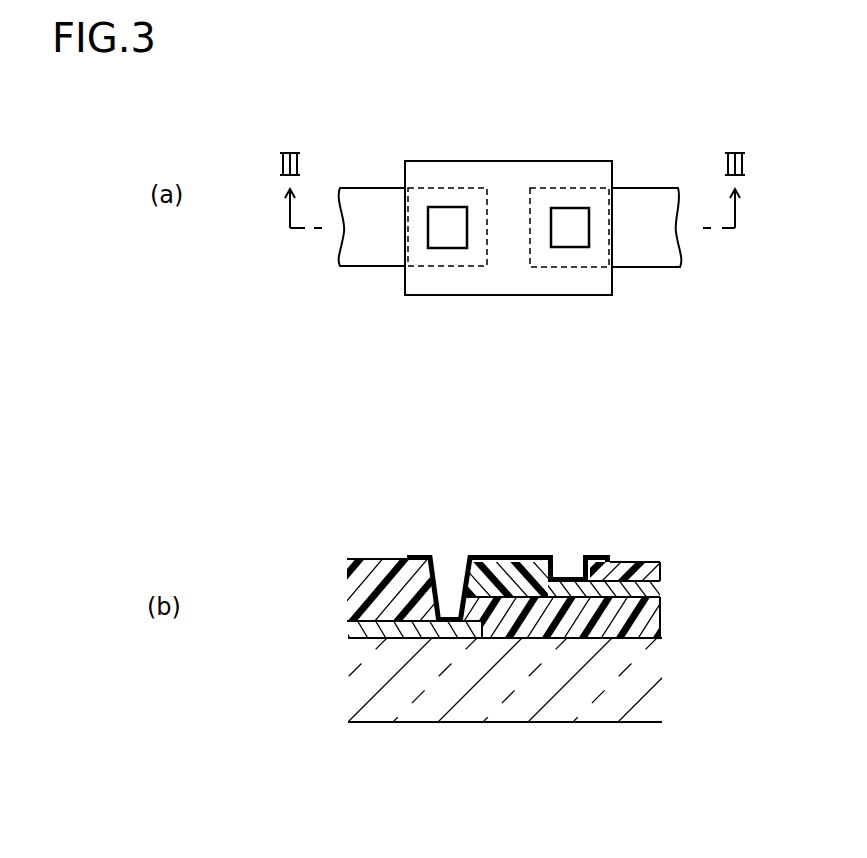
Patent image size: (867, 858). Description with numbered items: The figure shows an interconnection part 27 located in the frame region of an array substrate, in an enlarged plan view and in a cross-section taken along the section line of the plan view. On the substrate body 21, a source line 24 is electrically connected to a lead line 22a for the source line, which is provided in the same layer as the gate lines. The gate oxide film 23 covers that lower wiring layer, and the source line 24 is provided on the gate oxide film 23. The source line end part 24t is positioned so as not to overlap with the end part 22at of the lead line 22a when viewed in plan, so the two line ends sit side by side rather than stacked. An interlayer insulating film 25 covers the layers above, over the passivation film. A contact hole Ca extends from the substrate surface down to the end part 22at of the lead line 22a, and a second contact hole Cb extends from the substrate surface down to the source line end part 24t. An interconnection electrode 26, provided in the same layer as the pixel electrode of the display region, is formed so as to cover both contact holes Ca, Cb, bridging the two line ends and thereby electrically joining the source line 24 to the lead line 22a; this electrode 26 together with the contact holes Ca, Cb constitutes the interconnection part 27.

The substrate body 21 is at (358, 699).
The lead line for the source line 22a is at (365, 205).
The end part of the lead line 22at is at (447, 200).
The gate oxide film 23 is at (650, 620).
The source line 24 is at (657, 205).
The source line end part 24t is at (568, 203).
The interlayer insulating film 25 is at (482, 570).
The interconnection electrode 26 is at (604, 284).
The interconnection part 27 is at (625, 142).
The contact hole Ca is at (435, 234).
The contact hole Cb is at (558, 235).